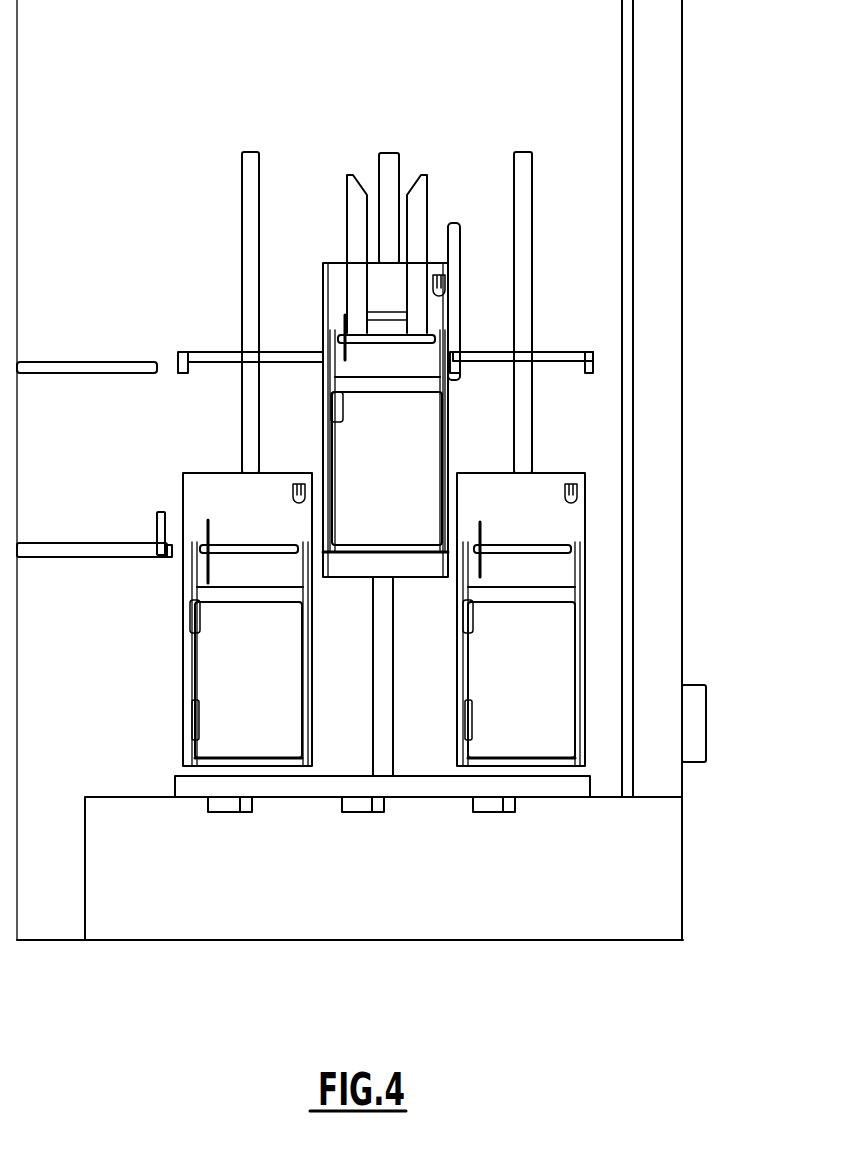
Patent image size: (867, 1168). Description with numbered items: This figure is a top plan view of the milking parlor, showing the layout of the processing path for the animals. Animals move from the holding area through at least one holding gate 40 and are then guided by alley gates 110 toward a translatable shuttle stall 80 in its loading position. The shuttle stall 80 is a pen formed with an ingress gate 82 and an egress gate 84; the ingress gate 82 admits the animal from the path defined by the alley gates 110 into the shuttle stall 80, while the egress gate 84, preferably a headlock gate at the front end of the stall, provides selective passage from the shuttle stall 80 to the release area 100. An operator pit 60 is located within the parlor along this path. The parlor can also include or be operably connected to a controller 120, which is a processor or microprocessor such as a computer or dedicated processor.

The release area 100 is at (225, 64).
The alley gates 110 is at (213, 350).
The egress gate 84 is at (418, 200).
The holding gate 40 is at (157, 530).
The ingress gate 82 is at (183, 702).
The shuttle stall 80 is at (537, 692).
The operator pit 60 is at (456, 896).
The controller 120 is at (696, 716).